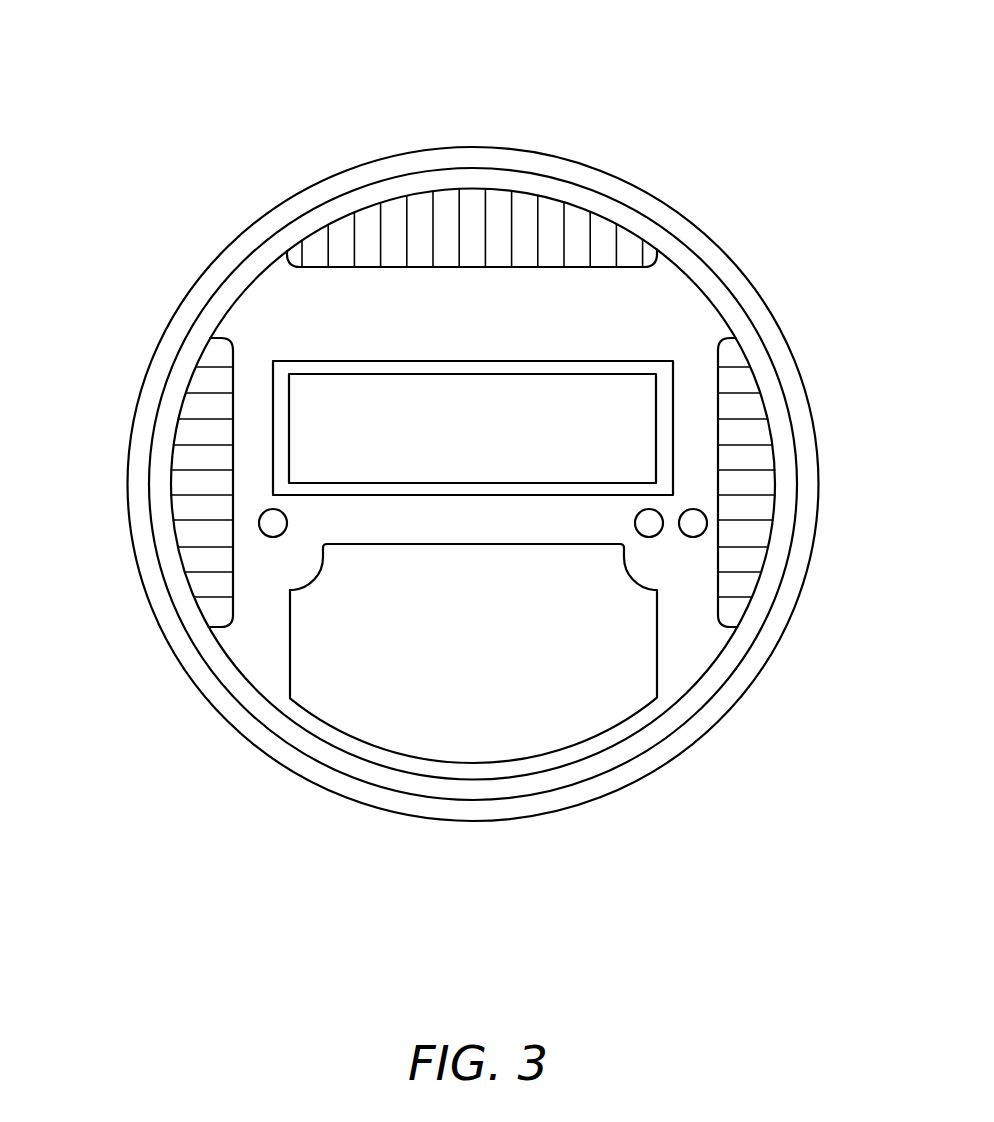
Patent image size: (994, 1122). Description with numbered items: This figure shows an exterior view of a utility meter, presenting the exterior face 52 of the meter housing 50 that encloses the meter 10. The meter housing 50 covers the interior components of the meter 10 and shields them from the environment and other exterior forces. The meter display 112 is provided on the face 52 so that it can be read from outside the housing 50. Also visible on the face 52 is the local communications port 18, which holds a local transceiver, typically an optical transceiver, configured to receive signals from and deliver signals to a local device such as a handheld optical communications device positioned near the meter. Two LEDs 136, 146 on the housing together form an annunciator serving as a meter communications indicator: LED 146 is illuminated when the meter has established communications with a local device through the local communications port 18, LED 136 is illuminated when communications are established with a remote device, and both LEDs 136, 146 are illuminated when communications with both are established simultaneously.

The meter 10 is at (408, 92).
The meter housing 50 is at (263, 217).
The meter display 112 is at (618, 395).
The local communications port 18 is at (260, 516).
The LED 146 is at (659, 513).
The LED 136 is at (707, 519).
The exterior face 52 is at (692, 642).